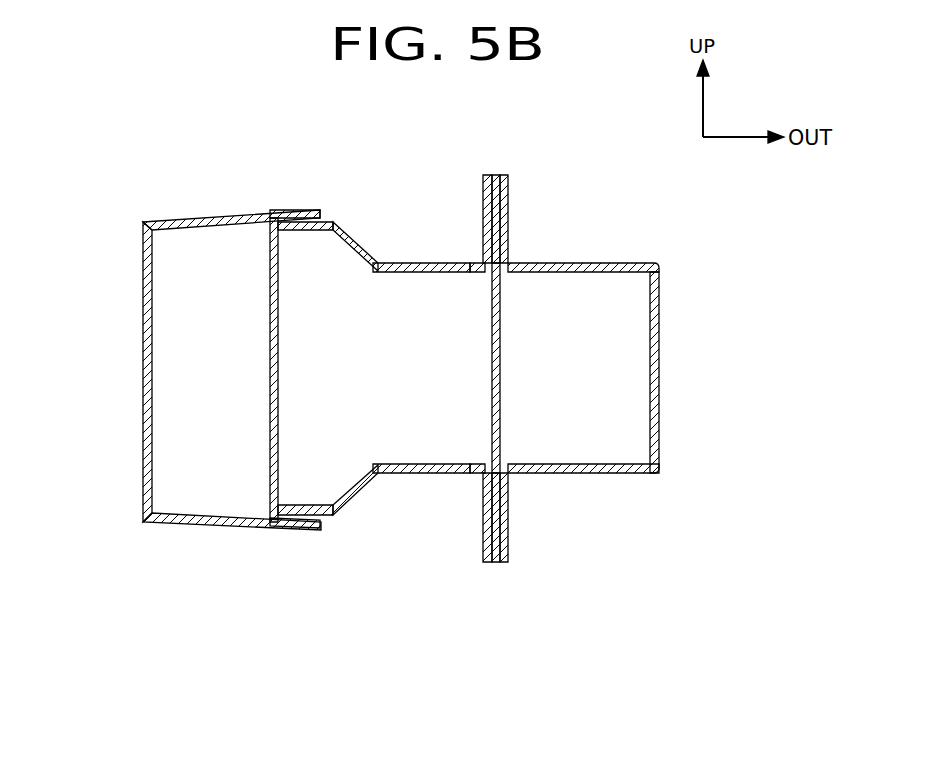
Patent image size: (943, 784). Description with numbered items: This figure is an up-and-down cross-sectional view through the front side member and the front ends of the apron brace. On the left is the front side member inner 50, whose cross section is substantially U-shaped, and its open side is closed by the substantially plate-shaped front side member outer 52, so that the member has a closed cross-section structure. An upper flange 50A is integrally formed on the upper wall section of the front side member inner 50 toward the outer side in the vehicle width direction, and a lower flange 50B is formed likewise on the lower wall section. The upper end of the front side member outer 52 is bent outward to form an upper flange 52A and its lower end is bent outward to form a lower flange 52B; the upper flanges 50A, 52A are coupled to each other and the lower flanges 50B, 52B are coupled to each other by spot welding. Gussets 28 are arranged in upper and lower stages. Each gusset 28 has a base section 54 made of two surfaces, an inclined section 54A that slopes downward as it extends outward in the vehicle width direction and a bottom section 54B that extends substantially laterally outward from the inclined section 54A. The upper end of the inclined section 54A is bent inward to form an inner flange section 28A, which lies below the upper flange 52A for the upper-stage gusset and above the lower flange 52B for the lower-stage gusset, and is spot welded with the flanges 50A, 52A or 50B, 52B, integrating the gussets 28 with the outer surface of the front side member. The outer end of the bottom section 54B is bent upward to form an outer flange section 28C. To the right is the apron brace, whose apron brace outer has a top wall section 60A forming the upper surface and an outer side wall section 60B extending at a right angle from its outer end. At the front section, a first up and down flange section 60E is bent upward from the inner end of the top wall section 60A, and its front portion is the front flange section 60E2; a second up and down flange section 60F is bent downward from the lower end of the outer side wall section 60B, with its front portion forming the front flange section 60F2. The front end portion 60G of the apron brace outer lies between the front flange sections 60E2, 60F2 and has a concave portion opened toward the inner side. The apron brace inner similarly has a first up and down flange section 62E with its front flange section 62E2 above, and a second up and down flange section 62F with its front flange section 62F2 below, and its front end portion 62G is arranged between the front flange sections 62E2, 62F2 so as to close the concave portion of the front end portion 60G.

The front side member inner 50 is at (192, 366).
The upper flange 50A is at (296, 209).
The lower flange 50B is at (288, 531).
The front side member outer 52 is at (275, 365).
The upper flange 52A is at (326, 217).
The lower flange 52B is at (334, 518).
The gusset 28 is at (381, 367).
The inner flange section 28A is at (298, 232).
The outer flange section 28C is at (482, 200).
The base section 54 is at (396, 368).
The inclined section 54A is at (352, 252).
The bottom section 54B is at (421, 368).
The top wall section 60A is at (607, 262).
The outer side wall section 60B is at (661, 360).
The front end portion 60G is at (604, 475).
The first up and down flange section 60E is at (579, 219).
The front flange section 60E2 is at (508, 190).
The second up and down flange section 60F is at (585, 518).
The front flange section 60F2 is at (508, 535).
The front end portion 62G is at (502, 360).
The first up and down flange section 62E is at (524, 188).
The front flange section 62E2 is at (495, 173).
The second up and down flange section 62F is at (524, 548).
The front flange section 62F2 is at (497, 565).